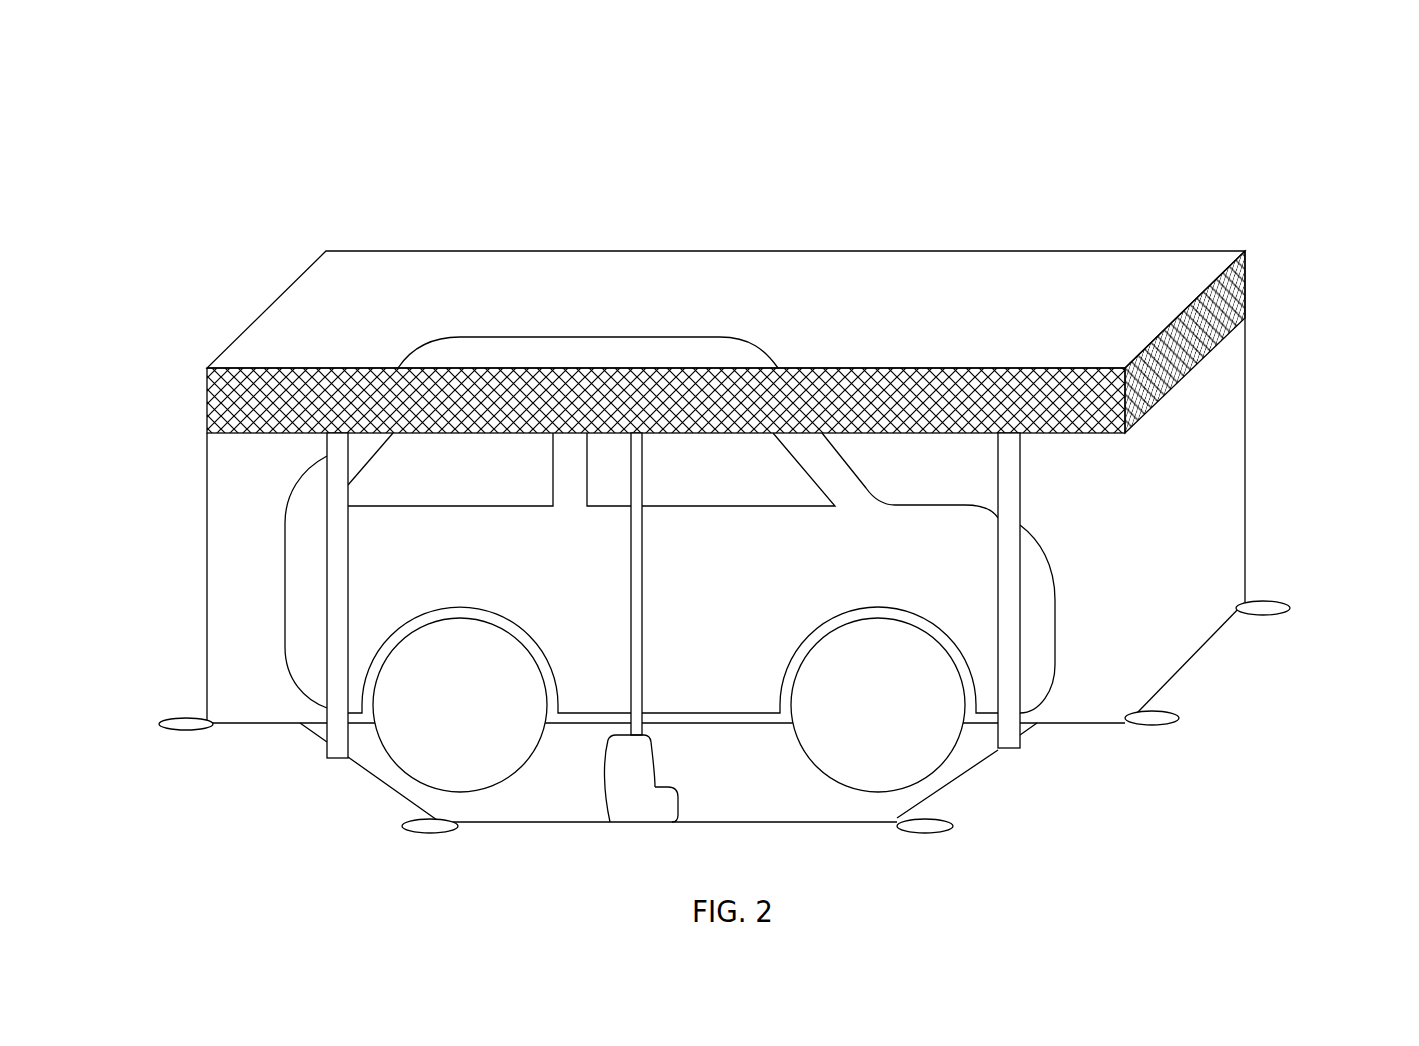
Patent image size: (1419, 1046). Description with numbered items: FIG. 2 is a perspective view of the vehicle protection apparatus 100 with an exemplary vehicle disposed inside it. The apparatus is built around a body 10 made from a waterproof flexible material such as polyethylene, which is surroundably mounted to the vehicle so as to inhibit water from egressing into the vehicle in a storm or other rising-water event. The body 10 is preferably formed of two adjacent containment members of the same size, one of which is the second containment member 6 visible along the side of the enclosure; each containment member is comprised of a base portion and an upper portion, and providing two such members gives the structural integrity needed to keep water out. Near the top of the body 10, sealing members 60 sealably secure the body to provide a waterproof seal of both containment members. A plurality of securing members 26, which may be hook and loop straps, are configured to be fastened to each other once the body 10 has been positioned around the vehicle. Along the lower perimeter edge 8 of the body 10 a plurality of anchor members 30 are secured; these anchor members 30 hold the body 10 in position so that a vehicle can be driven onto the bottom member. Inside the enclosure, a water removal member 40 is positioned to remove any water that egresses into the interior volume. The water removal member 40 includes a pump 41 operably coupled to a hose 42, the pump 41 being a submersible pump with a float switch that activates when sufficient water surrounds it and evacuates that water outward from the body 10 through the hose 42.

The vehicle protection apparatus 100 is at (1295, 147).
The body 10 is at (208, 489).
The sealing members 60 is at (1245, 295).
The second containment member 6 is at (1245, 367).
The lower perimeter edge 8 is at (1200, 649).
The anchor members 30 is at (1265, 603).
The securing members 26 is at (338, 675).
The hose 42 is at (627, 660).
The water removal member 40 is at (620, 790).
The pump 41 is at (640, 810).